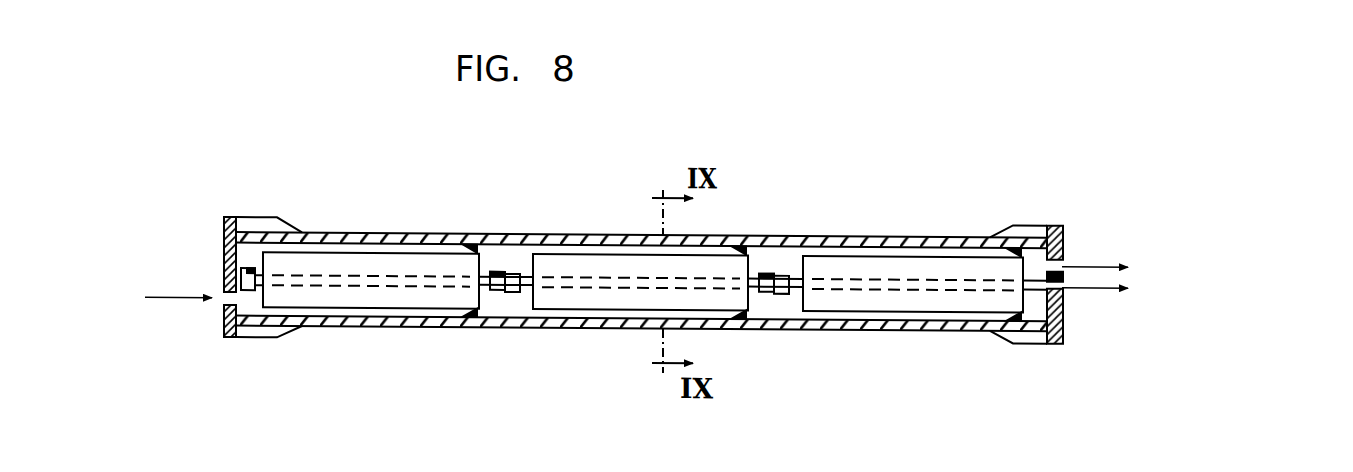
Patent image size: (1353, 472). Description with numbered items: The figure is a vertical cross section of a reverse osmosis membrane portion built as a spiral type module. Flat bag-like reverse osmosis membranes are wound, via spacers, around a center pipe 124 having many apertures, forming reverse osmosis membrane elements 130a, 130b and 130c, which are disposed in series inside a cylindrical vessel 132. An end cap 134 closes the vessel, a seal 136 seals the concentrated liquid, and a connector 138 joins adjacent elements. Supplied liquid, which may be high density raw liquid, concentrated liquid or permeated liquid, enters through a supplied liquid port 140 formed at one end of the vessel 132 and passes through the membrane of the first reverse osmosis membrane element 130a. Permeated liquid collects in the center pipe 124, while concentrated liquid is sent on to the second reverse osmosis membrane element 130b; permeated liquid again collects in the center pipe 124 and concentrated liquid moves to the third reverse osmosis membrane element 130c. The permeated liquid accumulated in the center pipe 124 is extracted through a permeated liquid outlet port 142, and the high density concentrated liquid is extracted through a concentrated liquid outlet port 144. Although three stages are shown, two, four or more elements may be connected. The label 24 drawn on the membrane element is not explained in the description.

The reverse osmosis membrane 24 is at (583, 275).
The center pipe 124 is at (486, 291).
The first reverse osmosis membrane element 130a is at (349, 307).
The second reverse osmosis membrane element 130b is at (603, 307).
The third reverse osmosis membrane element 130c is at (905, 307).
The cylindrical vessel 132 is at (866, 232).
The end cap 134 is at (248, 268).
The seal 136 is at (483, 232).
The connector 138 is at (503, 290).
The supplied liquid port 140 is at (222, 300).
The permeated liquid outlet port 142 is at (1065, 283).
The concentrated liquid outlet port 144 is at (1064, 256).